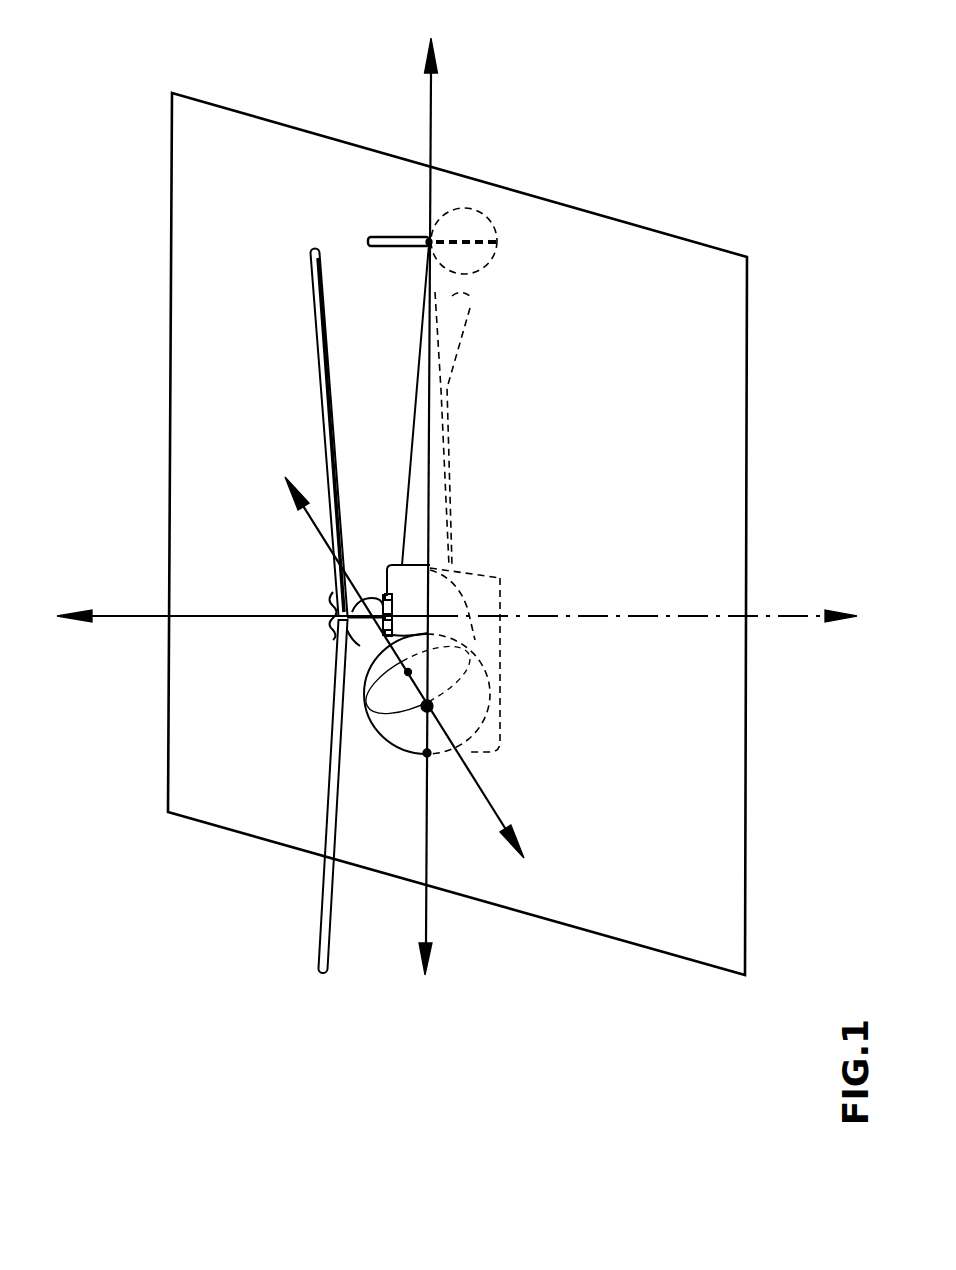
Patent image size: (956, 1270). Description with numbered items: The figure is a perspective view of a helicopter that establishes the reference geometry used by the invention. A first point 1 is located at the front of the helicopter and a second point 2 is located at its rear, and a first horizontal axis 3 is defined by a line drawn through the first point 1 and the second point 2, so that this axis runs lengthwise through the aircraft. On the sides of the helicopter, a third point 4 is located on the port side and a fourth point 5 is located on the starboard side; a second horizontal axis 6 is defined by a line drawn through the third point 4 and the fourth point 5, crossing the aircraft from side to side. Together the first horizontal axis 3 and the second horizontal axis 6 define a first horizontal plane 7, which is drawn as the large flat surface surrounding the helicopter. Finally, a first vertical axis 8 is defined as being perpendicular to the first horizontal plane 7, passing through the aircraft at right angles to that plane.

The first point 1 is at (425, 757).
The second point 2 is at (427, 241).
The first horizontal axis 3 is at (427, 508).
The third point 4 is at (433, 706).
The fourth point 5 is at (408, 672).
The second horizontal axis 6 is at (400, 670).
The first horizontal plane 7 is at (668, 258).
The first vertical axis 8 is at (455, 616).